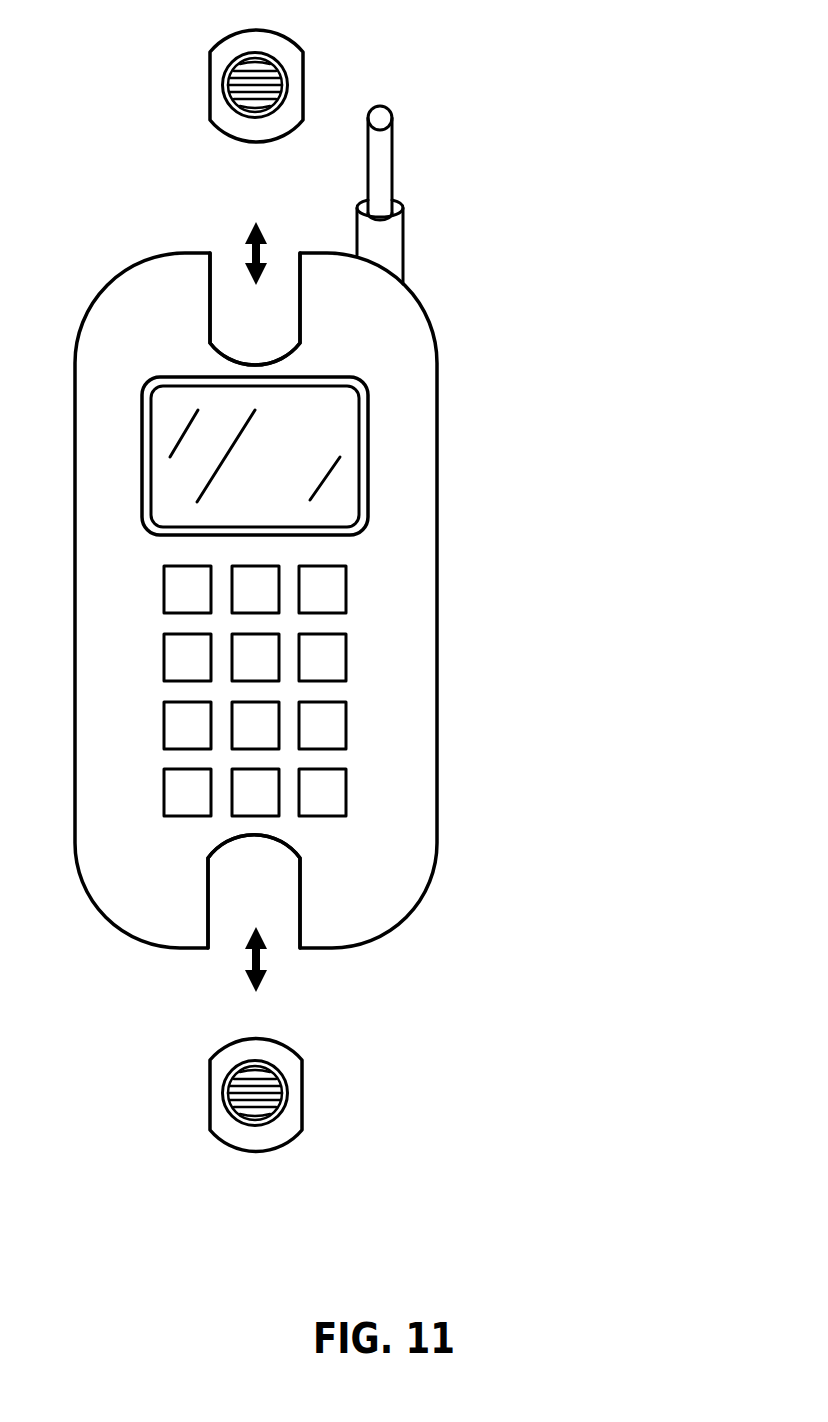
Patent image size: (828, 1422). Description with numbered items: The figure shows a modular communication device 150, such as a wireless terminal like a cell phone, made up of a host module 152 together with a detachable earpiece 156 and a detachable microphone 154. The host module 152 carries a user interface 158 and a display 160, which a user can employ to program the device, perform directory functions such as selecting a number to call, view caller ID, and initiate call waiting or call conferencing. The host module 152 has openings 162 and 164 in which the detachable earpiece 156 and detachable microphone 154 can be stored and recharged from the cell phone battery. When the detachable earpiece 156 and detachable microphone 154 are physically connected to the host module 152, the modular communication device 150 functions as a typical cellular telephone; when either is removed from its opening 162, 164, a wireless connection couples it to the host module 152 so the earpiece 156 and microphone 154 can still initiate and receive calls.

The modular communication device 150 is at (618, 272).
The host module 152 is at (437, 390).
The detachable microphone 154 is at (302, 1058).
The detachable earpiece 156 is at (305, 67).
The user interface 158 is at (347, 653).
The display 160 is at (178, 378).
The opening 162 is at (302, 898).
The opening 164 is at (302, 293).